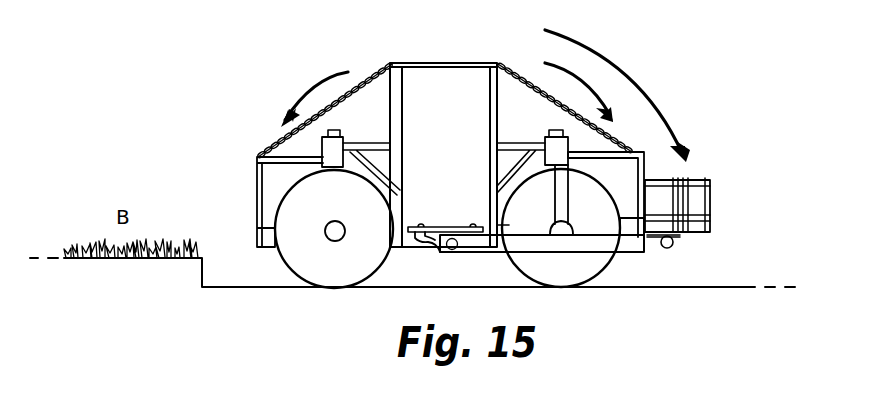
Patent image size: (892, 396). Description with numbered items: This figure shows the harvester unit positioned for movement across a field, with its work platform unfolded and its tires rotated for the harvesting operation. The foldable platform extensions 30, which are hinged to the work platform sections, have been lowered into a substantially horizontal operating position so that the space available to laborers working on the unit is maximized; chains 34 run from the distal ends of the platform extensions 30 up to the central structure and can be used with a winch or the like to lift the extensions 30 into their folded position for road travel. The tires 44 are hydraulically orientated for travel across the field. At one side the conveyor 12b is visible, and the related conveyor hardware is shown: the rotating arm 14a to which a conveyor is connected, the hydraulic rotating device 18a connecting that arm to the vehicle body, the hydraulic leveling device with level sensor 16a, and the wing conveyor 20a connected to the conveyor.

The chains 34 is at (380, 72).
The conveyor 12b is at (660, 182).
The wing conveyor 20a is at (697, 197).
The hydraulic leveling device with level sensor 16a is at (674, 248).
The foldable platform extension 30 is at (268, 258).
The tires 44 is at (333, 265).
The hydraulic rotating device 18a is at (440, 253).
The rotating arm 14a is at (580, 252).